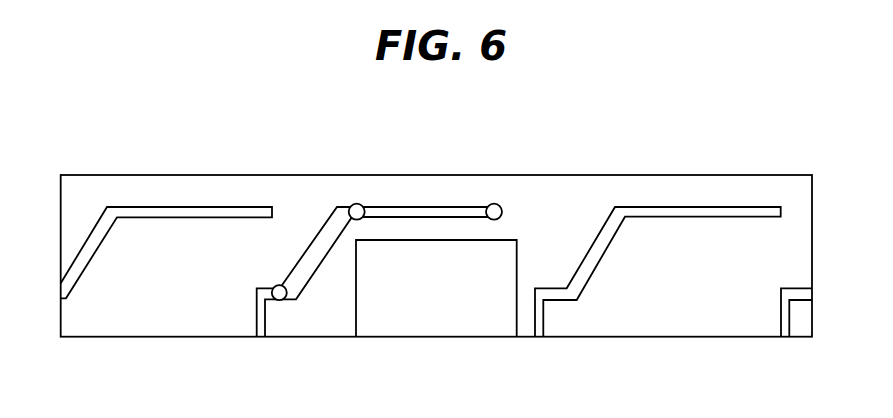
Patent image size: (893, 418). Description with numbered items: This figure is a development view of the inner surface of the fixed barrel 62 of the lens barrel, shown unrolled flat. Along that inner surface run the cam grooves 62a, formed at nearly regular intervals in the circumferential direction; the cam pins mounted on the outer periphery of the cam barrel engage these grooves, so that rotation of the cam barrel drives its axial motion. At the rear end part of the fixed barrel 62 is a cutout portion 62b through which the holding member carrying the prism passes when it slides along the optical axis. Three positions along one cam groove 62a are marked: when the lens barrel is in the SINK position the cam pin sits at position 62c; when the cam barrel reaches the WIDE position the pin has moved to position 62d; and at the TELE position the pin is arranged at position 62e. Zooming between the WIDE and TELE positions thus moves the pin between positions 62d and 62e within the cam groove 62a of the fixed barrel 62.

The fixed barrel 62 is at (777, 175).
The cam groove 62a is at (187, 210).
The cutout portion 62b is at (417, 242).
The position 62c is at (281, 300).
The position 62d is at (355, 204).
The position 62e is at (495, 204).